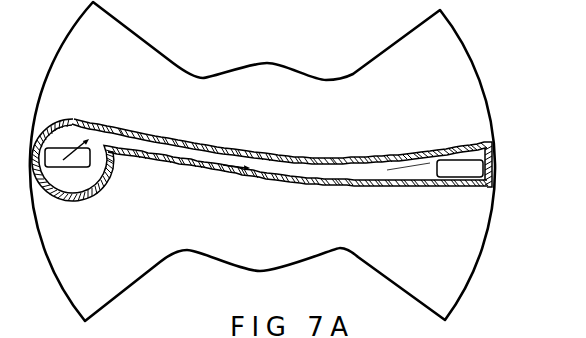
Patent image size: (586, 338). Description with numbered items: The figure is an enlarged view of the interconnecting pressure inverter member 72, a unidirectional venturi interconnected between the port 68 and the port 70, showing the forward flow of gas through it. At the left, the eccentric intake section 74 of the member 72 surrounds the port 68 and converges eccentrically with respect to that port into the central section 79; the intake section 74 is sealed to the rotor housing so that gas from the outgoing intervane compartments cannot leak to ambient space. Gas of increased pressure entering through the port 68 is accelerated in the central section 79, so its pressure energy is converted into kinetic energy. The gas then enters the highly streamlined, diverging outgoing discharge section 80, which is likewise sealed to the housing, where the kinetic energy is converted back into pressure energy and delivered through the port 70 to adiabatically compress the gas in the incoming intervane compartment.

The port 68 is at (44, 153).
The port 70 is at (474, 170).
The interconnecting pressure inverter member 72 is at (134, 133).
The eccentric intake section 74 is at (98, 191).
The central section 79 is at (228, 143).
The outgoing discharge section 80 is at (410, 141).